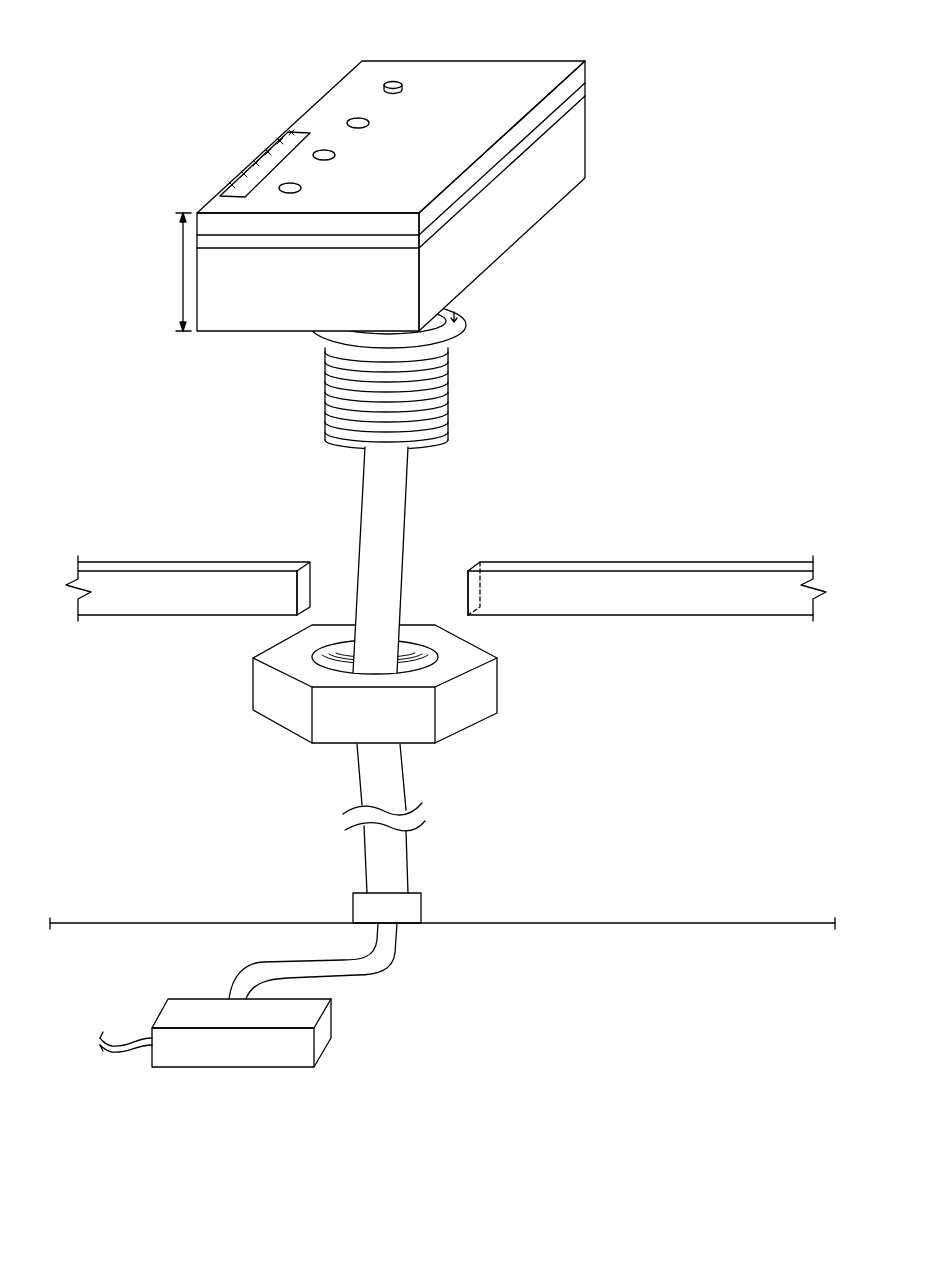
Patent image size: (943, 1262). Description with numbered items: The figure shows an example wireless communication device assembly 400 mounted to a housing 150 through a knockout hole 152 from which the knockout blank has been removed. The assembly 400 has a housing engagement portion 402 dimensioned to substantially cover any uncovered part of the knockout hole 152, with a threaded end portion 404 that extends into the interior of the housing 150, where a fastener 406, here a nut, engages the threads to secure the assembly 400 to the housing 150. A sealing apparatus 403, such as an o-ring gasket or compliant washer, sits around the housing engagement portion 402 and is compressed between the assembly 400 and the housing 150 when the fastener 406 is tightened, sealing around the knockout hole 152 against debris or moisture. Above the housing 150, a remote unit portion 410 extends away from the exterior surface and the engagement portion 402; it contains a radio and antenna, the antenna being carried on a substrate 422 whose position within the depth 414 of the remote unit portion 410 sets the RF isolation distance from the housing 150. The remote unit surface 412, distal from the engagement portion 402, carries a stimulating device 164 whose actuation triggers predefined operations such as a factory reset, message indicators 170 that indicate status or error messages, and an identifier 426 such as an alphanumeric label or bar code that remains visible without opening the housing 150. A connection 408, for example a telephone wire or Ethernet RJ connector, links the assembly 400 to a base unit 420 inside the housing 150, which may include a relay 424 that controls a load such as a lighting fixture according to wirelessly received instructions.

The wireless communication device assembly 400 is at (152, 38).
The stimulating device 164 is at (396, 81).
The message indicator 170 is at (356, 118).
The remote unit surface 412 is at (553, 60).
The substrate 422 is at (585, 90).
The identifier 426 is at (292, 140).
The depth 414 is at (180, 270).
The remote unit portion 410 is at (512, 244).
The sealing apparatus 403 is at (466, 318).
The housing engagement portion 402 is at (290, 335).
The threaded end portion 404 is at (348, 448).
The connection 408 is at (413, 502).
The knockout hole 152 is at (443, 553).
The housing 150 is at (652, 565).
The fastener 406 is at (497, 683).
The base unit 420 is at (612, 920).
The relay 424 is at (318, 1040).